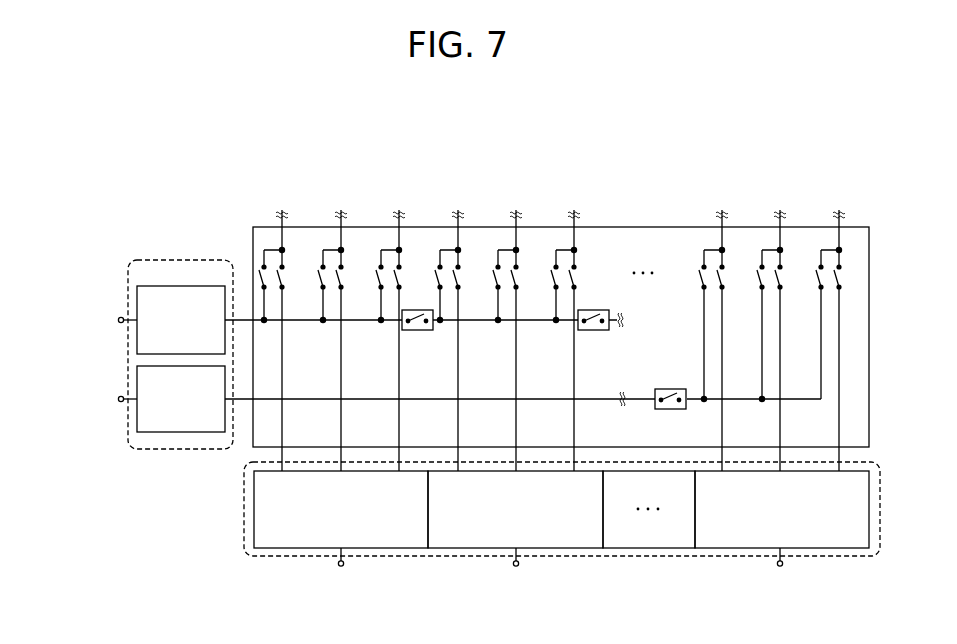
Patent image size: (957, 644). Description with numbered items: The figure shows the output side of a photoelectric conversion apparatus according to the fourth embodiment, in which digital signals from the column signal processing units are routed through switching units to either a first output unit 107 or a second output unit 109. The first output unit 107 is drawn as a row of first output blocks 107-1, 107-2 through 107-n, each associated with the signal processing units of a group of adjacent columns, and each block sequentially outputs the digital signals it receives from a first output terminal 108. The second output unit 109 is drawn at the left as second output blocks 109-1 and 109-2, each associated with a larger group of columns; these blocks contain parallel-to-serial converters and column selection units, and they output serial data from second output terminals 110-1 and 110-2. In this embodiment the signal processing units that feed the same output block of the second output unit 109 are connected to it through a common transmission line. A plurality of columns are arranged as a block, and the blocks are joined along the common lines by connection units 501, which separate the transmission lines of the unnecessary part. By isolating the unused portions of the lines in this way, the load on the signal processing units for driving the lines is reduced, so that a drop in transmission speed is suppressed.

The first output unit 107 is at (244, 478).
The first output block 107-1 is at (300, 550).
The first output block 107-2 is at (572, 550).
The first output block 107-n is at (822, 549).
The first output terminal 108 is at (344, 566).
The second output unit 109 is at (155, 260).
The second output block 109-1 is at (143, 286).
The second output block 109-2 is at (143, 366).
The second output terminal 110-1 is at (118, 320).
The second output terminal 110-2 is at (118, 399).
The connection unit 501 is at (423, 332).